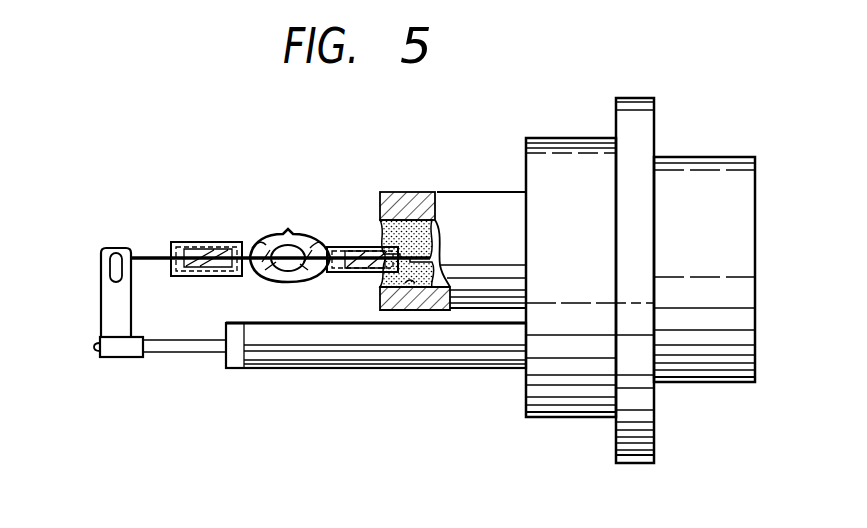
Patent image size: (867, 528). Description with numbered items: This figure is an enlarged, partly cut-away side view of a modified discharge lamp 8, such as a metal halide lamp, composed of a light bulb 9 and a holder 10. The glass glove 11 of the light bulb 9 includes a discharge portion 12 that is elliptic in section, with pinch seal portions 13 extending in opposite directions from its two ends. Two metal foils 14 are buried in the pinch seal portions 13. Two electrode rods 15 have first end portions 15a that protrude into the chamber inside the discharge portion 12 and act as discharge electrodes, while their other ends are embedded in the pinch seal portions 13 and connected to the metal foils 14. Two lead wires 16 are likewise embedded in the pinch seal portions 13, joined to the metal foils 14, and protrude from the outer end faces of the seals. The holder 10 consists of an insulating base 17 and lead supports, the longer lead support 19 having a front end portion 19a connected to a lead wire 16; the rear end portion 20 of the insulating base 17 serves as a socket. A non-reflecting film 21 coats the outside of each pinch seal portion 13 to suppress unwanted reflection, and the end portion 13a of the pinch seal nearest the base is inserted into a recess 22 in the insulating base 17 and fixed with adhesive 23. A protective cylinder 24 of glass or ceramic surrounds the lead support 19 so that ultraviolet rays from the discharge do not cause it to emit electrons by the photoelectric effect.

The discharge lamp 8 is at (215, 124).
The light bulb 9 is at (276, 236).
The holder 10 is at (568, 137).
The glass glove 11 is at (332, 412).
The discharge portion 12 is at (276, 283).
The pinch seal portions 13 is at (268, 284).
The end portion of the pinch seal portion 13a is at (395, 225).
The metal foils 14 is at (160, 256).
The electrode rods 15 is at (183, 242).
The first end portions of the electrode rods 15a is at (262, 240).
The lead wires 16 is at (120, 248).
The insulating base 17 is at (550, 418).
The lead support 19 is at (172, 358).
The front end portion of the lead support 19a is at (100, 357).
The rear end portion of the insulating base 20 is at (690, 157).
The non-reflecting film 21 is at (205, 278).
The recess 22 is at (412, 312).
The adhesive 23 is at (362, 325).
The protective cylinder 24 is at (402, 368).